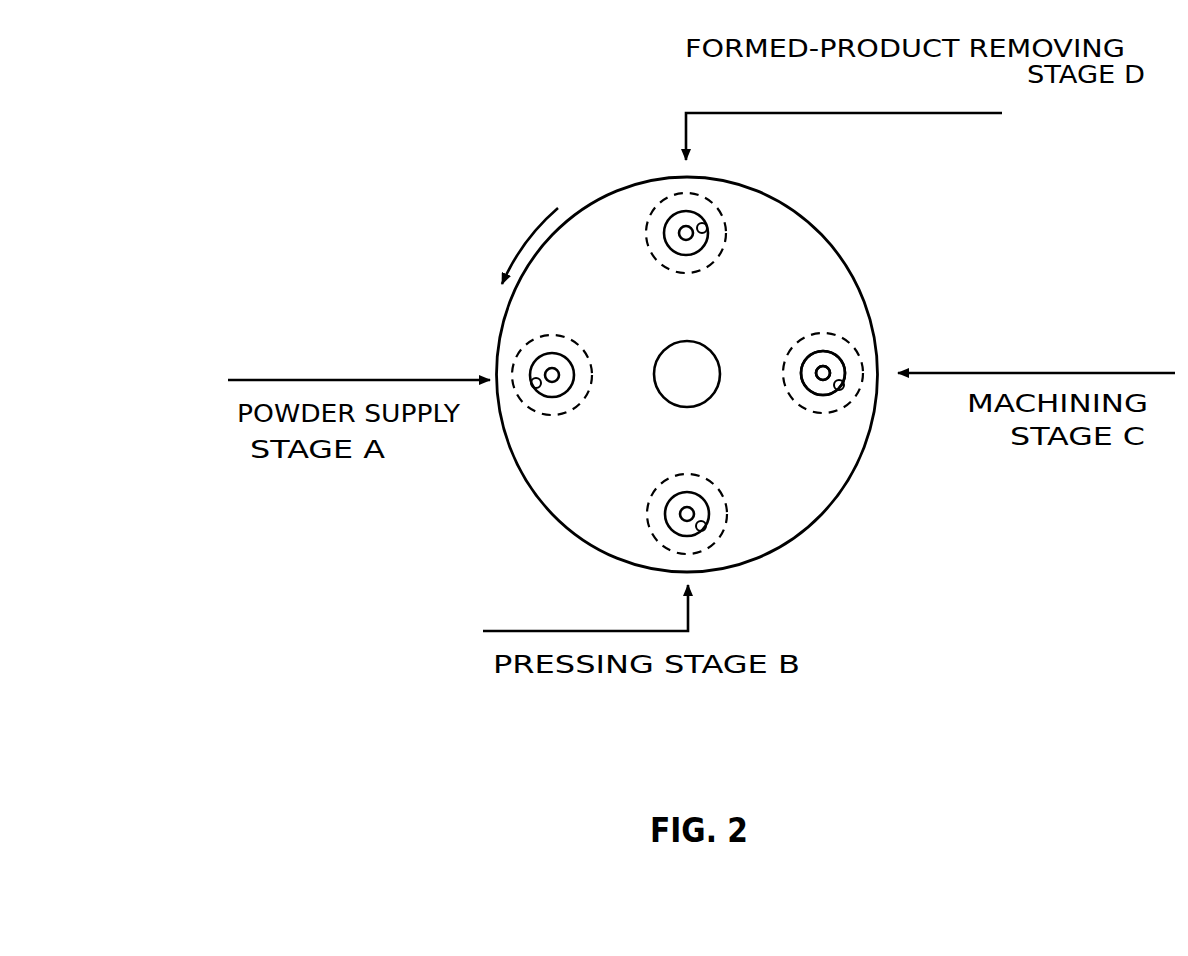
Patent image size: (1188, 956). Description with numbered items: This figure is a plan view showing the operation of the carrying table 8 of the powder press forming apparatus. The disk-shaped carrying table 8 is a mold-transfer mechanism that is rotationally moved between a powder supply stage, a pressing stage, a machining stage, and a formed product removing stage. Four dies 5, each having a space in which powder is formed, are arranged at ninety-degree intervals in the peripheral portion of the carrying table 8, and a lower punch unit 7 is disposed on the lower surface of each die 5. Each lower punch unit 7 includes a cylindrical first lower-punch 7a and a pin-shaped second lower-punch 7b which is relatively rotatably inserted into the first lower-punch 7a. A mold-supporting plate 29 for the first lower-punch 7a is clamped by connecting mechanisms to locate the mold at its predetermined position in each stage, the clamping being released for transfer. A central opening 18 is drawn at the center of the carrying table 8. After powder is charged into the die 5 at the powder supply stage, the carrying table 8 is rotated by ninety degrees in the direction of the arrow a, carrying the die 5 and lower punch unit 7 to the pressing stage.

The die 5 is at (707, 229).
The lower punch unit 7 is at (676, 222).
The first lower-punch 7a is at (825, 356).
The second lower-punch 7b is at (829, 368).
The carrying table 8 is at (596, 195).
The center shaft hole 18 is at (712, 355).
The mold-supporting plate 29 is at (650, 214).
The arrow a is at (527, 240).